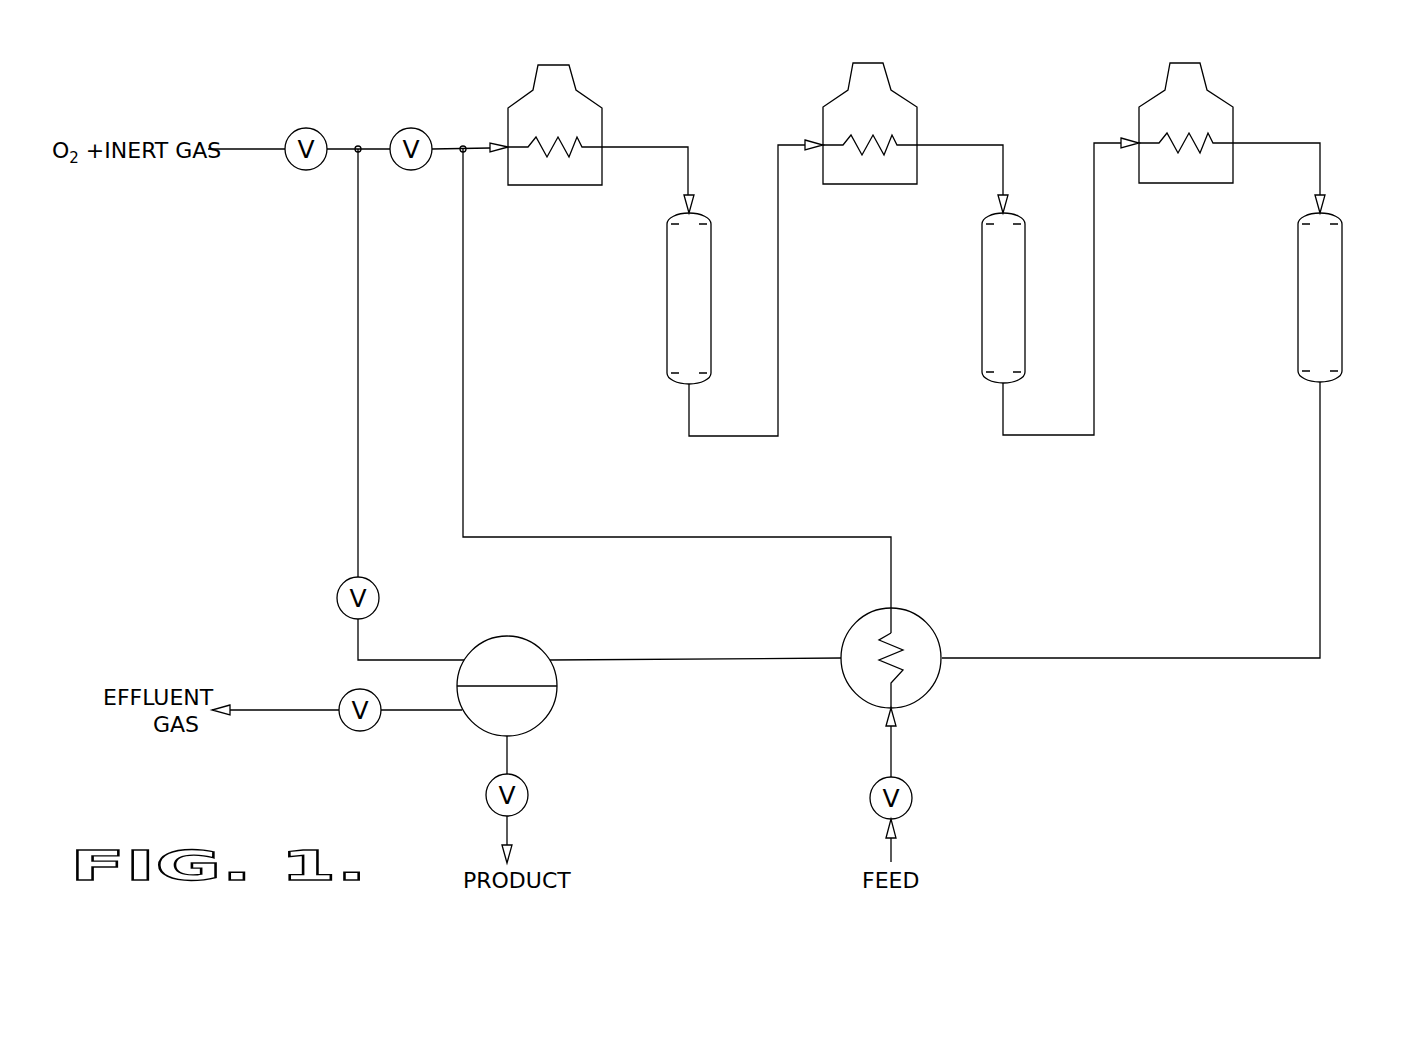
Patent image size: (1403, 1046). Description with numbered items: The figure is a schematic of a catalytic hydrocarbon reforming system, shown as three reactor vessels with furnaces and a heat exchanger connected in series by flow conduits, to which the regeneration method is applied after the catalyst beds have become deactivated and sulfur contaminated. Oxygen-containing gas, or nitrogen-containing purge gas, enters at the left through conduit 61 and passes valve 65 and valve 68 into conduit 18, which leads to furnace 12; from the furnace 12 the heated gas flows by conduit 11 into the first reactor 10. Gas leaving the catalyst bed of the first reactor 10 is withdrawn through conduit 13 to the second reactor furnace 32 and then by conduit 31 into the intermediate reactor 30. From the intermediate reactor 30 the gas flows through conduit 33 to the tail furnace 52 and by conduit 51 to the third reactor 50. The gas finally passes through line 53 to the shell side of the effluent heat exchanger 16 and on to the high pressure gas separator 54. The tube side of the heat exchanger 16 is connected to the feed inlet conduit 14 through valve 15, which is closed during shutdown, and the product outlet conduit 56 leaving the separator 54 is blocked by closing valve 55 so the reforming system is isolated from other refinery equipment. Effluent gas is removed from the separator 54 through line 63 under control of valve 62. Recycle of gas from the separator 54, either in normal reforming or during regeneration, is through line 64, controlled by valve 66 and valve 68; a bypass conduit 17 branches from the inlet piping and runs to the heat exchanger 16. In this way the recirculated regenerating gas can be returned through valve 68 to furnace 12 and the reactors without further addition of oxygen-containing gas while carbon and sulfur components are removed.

The first reactor 10 is at (670, 316).
The conduit 11 is at (686, 160).
The furnace 12 is at (533, 88).
The conduit 13 is at (722, 438).
The feed inlet conduit 14 is at (894, 848).
The valve 15 is at (912, 793).
The effluent heat exchanger 16 is at (917, 615).
The gas bypass line 17 is at (465, 316).
The conduit 18 is at (477, 145).
The second reactor 30 is at (982, 303).
The conduit 31 is at (983, 150).
The second reactor furnace 32 is at (848, 88).
The conduit 33 is at (1003, 432).
The third reactor 50 is at (1298, 303).
The conduit 51 is at (1318, 170).
The tail furnace 52 is at (1165, 88).
The line 53 is at (1318, 460).
The high pressure gas separator 54 is at (525, 640).
The valve 55 is at (528, 782).
The product outlet conduit 56 is at (510, 833).
The conduit 61 is at (252, 152).
The valve 62 is at (365, 731).
The line 63 is at (275, 712).
The line 64 is at (358, 497).
The valve 65 is at (309, 127).
The valve 66 is at (341, 590).
The valve 68 is at (416, 127).